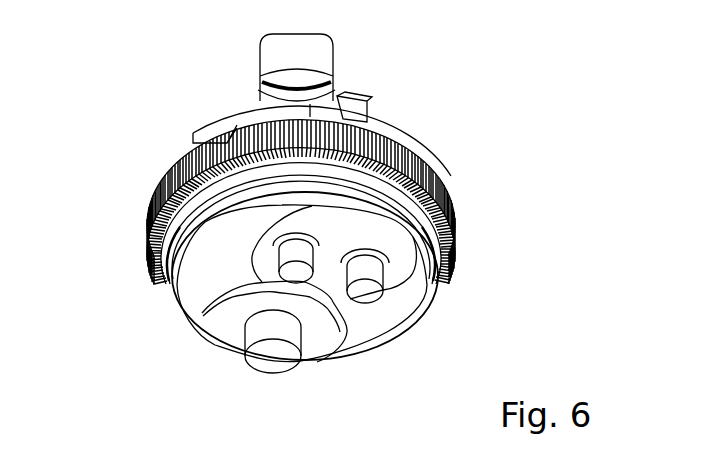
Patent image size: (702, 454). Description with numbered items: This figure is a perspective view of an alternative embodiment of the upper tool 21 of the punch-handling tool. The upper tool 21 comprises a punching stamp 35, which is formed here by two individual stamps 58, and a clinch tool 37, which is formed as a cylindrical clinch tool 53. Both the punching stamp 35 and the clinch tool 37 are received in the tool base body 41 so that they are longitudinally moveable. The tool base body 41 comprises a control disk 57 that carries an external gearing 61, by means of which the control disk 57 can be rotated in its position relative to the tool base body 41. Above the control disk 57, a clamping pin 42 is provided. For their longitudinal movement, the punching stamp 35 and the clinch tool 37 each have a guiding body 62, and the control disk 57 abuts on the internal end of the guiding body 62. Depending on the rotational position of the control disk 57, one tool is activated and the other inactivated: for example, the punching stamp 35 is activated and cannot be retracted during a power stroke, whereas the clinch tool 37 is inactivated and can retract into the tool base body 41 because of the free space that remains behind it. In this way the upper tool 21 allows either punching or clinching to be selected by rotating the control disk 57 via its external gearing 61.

The upper tool 21 is at (450, 120).
The clamping pin 42 is at (317, 63).
The control disk 57 is at (443, 193).
The external gearing 61 is at (448, 197).
The guiding body 62 is at (197, 226).
The punching stamp 35 is at (418, 299).
The tool base body 41 is at (173, 274).
The clinch tool 37 is at (234, 369).
The cylindrical clinch tool 53 is at (270, 363).
The individual stamps 58 is at (302, 266).